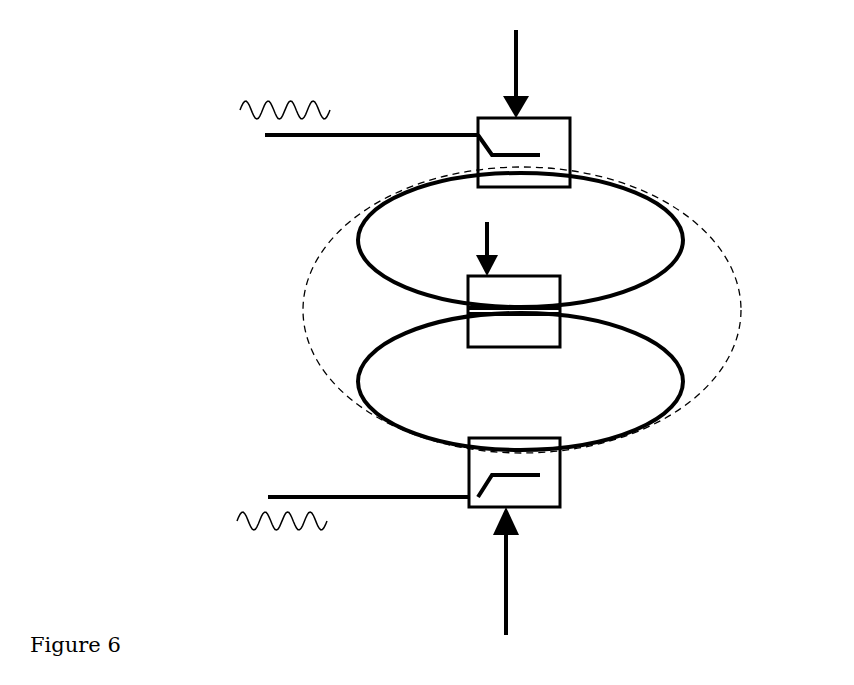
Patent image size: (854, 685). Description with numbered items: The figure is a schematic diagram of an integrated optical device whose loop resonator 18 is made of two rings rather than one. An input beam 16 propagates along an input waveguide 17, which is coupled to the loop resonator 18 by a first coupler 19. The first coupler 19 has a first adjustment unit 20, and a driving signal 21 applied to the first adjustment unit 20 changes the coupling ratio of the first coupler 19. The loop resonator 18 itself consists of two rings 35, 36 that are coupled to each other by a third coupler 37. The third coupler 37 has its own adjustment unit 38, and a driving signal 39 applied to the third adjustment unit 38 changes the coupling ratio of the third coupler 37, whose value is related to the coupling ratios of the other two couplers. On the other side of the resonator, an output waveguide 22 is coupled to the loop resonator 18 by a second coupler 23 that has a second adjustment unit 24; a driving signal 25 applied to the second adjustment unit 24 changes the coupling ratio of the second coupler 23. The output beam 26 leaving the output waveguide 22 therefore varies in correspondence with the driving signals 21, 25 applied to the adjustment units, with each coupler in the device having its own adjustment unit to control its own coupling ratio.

The input beam 16 is at (271, 98).
The input waveguide 17 is at (371, 116).
The loop resonator 18 is at (523, 310).
The first coupler 19 is at (593, 107).
The first adjustment unit 20 is at (524, 137).
The driving signal 21 is at (505, 69).
The output waveguide 22 is at (368, 483).
The second coupler 23 is at (631, 492).
The second adjustment unit 24 is at (514, 489).
The driving signal 25 is at (515, 571).
The output beam 26 is at (267, 538).
The ring 35 is at (520, 240).
The ring 36 is at (520, 381).
The third coupler 37 is at (575, 311).
The third adjustment unit 38 is at (514, 299).
The driving signal 39 is at (498, 249).